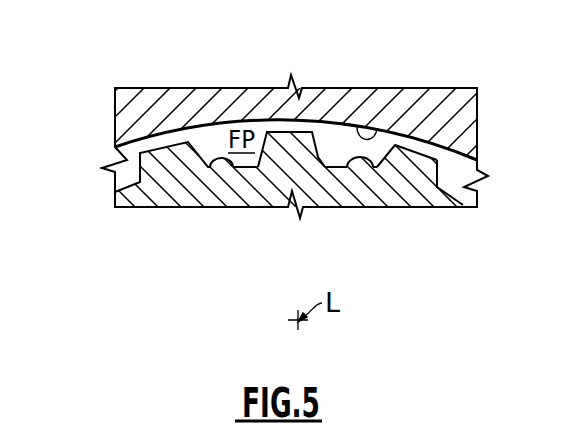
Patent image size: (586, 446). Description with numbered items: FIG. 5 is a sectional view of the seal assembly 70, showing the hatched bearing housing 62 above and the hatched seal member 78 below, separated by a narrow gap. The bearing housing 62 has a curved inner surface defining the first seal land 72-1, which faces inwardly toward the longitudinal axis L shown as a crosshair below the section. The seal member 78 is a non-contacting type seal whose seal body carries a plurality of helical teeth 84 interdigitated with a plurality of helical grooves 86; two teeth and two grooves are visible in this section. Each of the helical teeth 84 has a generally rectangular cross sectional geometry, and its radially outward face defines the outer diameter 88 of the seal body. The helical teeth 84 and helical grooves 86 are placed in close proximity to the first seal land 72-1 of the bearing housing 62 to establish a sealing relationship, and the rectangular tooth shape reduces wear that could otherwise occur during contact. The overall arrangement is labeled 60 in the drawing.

The seal assembly 60 is at (122, 60).
The bearing housing 62 is at (227, 103).
The seal assembly 70 is at (92, 152).
The first seal land 72-1 is at (370, 133).
The seal member 78 is at (176, 183).
The helical teeth 84 is at (303, 130).
The helical grooves 86 is at (230, 168).
The outer diameter 88 is at (315, 130).